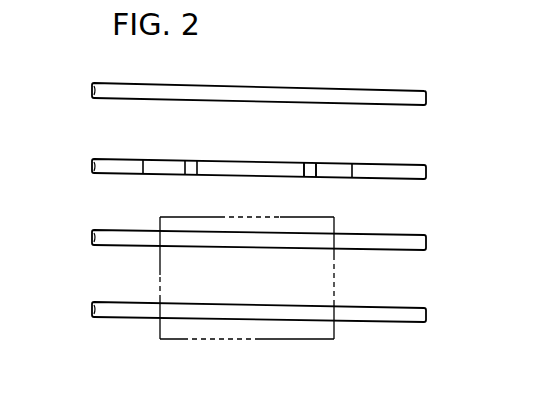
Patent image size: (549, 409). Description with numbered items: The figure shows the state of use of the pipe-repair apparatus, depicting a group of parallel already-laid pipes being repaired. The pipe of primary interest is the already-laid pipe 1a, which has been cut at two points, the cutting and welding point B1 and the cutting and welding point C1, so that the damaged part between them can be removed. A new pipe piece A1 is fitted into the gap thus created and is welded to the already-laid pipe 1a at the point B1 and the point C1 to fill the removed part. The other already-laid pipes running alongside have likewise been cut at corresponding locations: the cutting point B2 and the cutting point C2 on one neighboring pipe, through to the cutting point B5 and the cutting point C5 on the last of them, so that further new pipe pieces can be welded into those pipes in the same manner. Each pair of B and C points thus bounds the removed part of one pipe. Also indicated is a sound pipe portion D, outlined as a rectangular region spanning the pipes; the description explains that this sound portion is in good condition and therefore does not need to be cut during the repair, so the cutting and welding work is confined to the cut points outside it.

The already-laid pipe 1a is at (110, 159).
The new pipe piece A1 is at (271, 163).
The cutting and welding point B1 is at (197, 176).
The cutting point B2 is at (185, 176).
The cutting point B5 is at (147, 175).
The cutting and welding point C1 is at (304, 178).
The cutting point C2 is at (316, 178).
The cutting point C5 is at (352, 179).
The sound pipe portion D is at (180, 340).